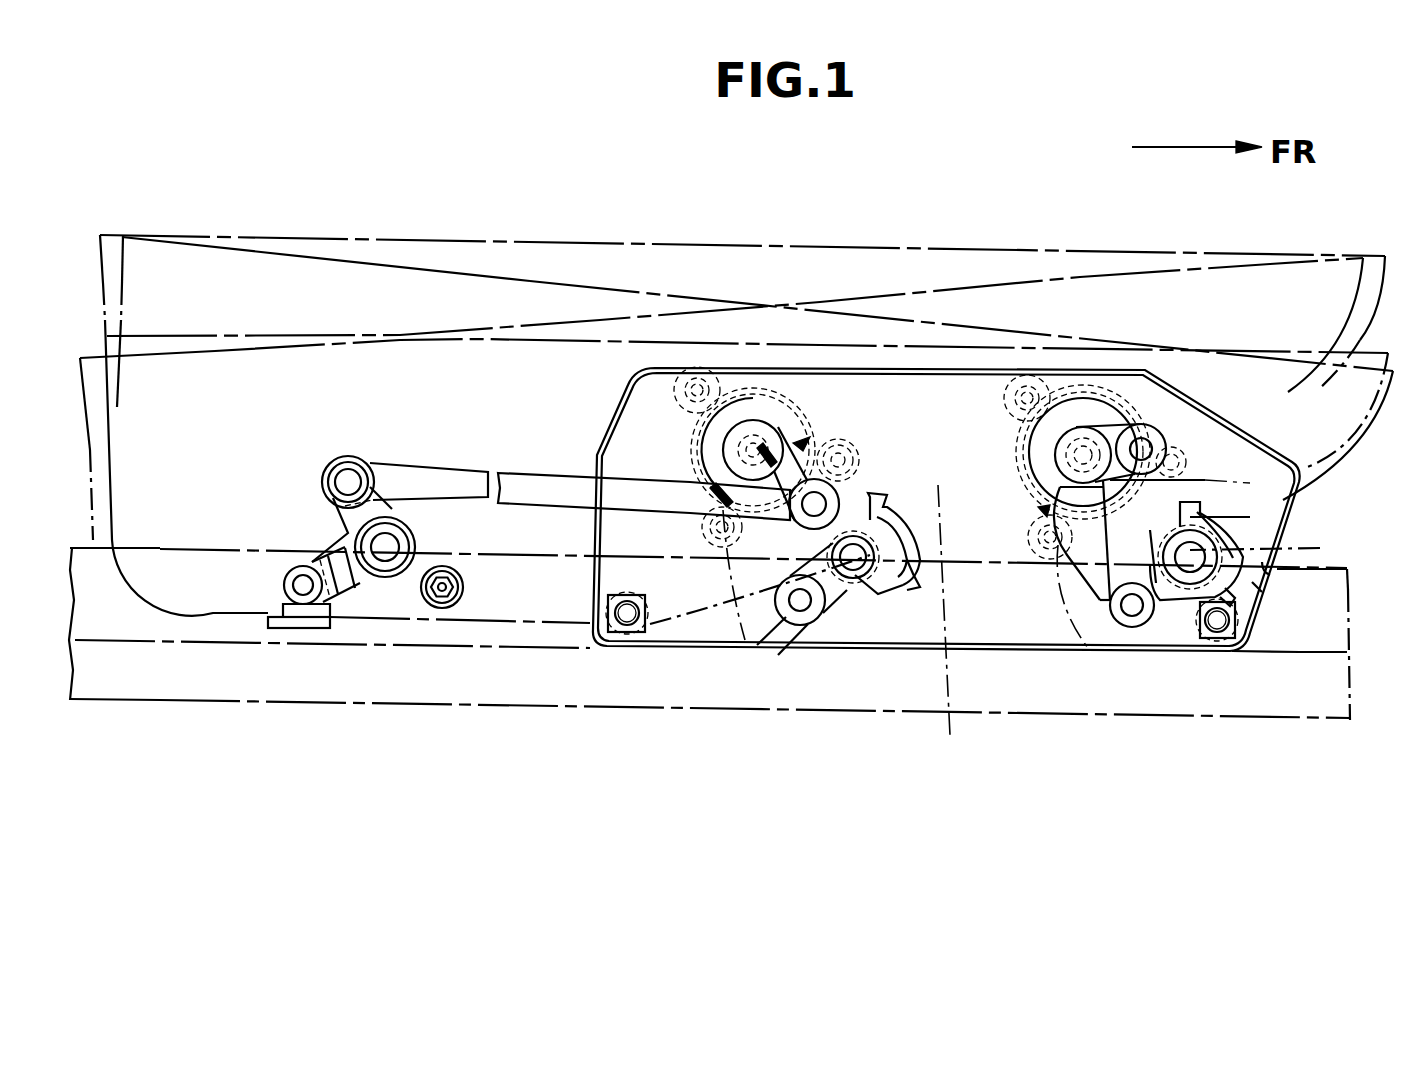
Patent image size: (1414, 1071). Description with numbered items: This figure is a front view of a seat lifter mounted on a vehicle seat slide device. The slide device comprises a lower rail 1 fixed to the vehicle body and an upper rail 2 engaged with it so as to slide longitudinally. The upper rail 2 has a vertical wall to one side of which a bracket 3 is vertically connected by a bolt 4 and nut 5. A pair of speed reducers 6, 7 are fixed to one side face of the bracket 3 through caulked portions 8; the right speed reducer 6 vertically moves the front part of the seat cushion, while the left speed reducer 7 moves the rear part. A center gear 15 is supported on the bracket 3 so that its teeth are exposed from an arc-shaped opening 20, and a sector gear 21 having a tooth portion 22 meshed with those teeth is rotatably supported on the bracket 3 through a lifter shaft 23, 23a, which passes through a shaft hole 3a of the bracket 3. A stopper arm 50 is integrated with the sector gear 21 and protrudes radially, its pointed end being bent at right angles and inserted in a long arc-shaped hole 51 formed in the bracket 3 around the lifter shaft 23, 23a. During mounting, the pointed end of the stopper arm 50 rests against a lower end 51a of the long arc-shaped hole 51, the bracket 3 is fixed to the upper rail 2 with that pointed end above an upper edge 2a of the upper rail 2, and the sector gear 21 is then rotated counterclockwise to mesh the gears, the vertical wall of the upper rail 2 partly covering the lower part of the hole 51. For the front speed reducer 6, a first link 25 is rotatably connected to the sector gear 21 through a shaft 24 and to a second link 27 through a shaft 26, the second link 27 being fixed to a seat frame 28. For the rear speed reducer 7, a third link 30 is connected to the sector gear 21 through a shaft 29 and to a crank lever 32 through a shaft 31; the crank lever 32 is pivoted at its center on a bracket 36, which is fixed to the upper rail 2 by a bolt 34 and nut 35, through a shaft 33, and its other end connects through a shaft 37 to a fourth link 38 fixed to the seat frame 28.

The lower rail 1 is at (877, 703).
The upper rail 2 is at (1300, 652).
The upper edge of the upper rail 2a is at (1255, 586).
The bracket 3 is at (1000, 627).
The shaft hole 3a is at (1320, 548).
The bolt 4 is at (623, 620).
The nut 5 is at (648, 634).
The speed reducer 6 is at (1098, 440).
The speed reducer 7 is at (805, 450).
The caulked portions 8 is at (697, 378).
The center gear 15 is at (753, 448).
The arc-shaped opening 20 is at (796, 441).
The sector gear 21 is at (772, 620).
The tooth portion 22 is at (737, 628).
The lifter shaft 23 is at (1265, 563).
The lifter shaft 23a is at (843, 615).
The shaft 24 is at (1130, 612).
The first link 25 is at (1123, 547).
The shaft 26 is at (1142, 438).
The second link 27 is at (1100, 448).
The seat frame 28 is at (954, 622).
The shaft 29 is at (815, 503).
The third link 30 is at (530, 483).
The shaft 31 is at (349, 482).
The crank lever 32 is at (343, 523).
The shaft 33 is at (387, 548).
The bolt 34 is at (441, 600).
The nut 35 is at (457, 600).
The bracket 36 is at (395, 600).
The shaft 37 is at (295, 582).
The fourth link 38 is at (307, 628).
The stopper arm 50 is at (885, 512).
The long arc-shaped hole 51 is at (880, 577).
The lower end of the long arc-shaped hole 51a is at (855, 575).